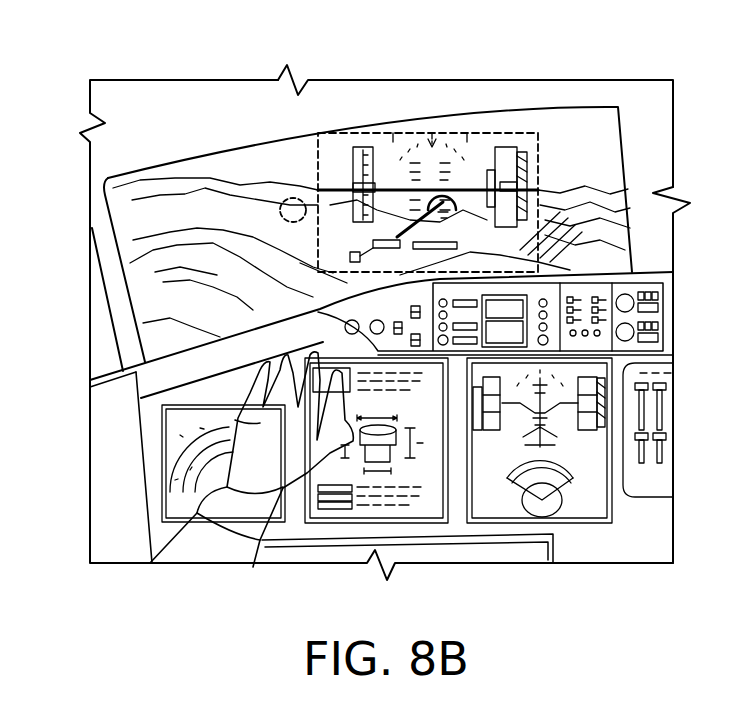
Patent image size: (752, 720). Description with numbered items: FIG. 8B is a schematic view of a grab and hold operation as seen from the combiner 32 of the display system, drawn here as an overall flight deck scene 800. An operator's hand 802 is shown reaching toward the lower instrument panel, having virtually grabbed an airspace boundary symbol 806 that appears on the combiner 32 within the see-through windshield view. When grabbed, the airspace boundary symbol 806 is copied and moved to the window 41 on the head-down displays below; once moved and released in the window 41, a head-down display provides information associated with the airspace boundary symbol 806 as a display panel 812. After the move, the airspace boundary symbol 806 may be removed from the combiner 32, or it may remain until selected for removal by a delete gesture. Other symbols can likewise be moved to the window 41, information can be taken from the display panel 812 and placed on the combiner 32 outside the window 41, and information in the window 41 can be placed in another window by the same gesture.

The flight deck display environment 800 is at (580, 78).
The combiner 32 is at (673, 125).
The airspace boundary symbol 806 is at (297, 197).
The operator's hand 802 is at (257, 426).
The display panel 812 is at (425, 510).
The window 41 is at (320, 525).